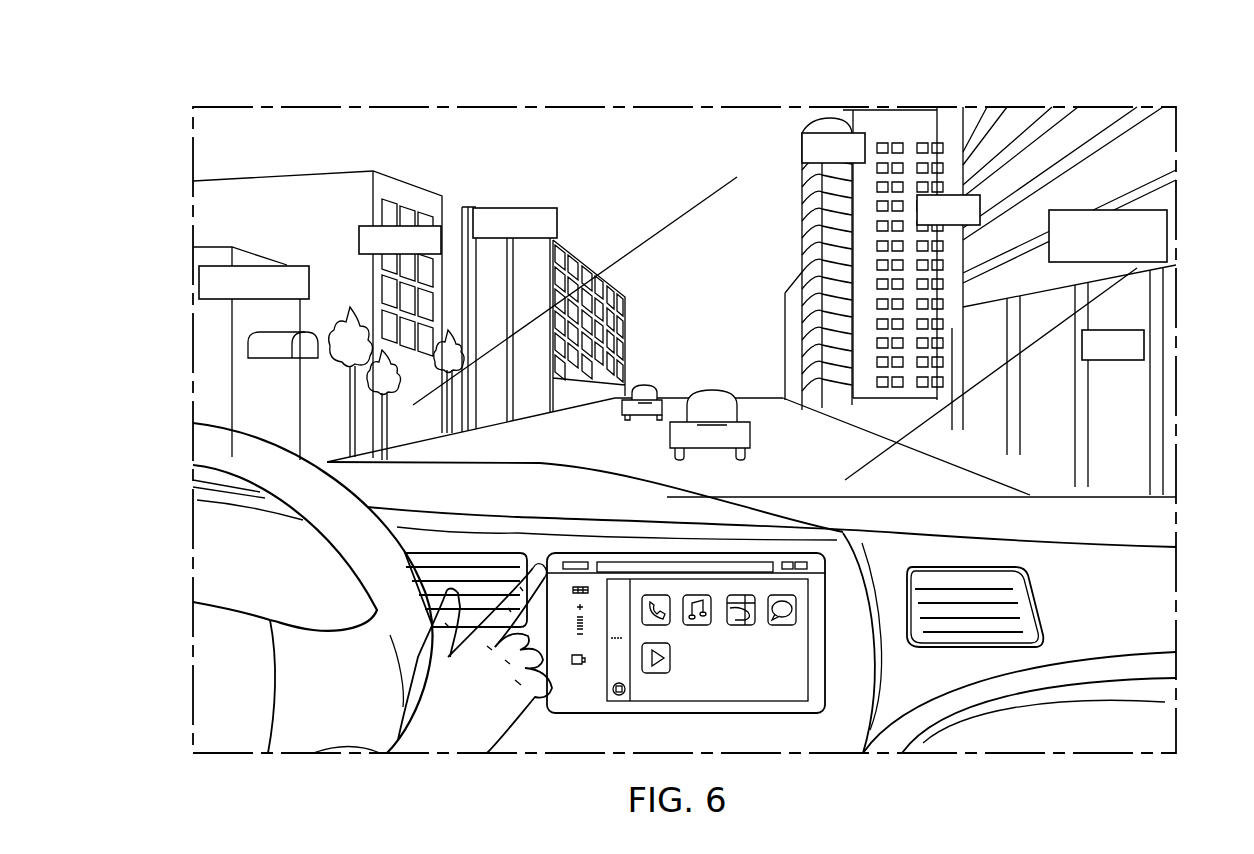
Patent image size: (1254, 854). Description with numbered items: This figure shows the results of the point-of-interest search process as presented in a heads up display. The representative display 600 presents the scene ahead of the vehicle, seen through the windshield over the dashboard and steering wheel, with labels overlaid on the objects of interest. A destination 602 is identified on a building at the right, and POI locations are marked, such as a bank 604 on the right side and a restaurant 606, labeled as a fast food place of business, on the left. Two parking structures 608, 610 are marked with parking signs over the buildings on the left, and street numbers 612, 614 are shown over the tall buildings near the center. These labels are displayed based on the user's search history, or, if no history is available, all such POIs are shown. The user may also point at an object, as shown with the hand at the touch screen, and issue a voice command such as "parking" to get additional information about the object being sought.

The representative display 600 is at (687, 70).
The destination 602 is at (1167, 235).
The bank 604 is at (1144, 345).
The restaurant 606 is at (199, 282).
The parking structure 608 is at (528, 208).
The parking structure 610 is at (414, 226).
The street number 612 is at (862, 133).
The street number 614 is at (958, 195).